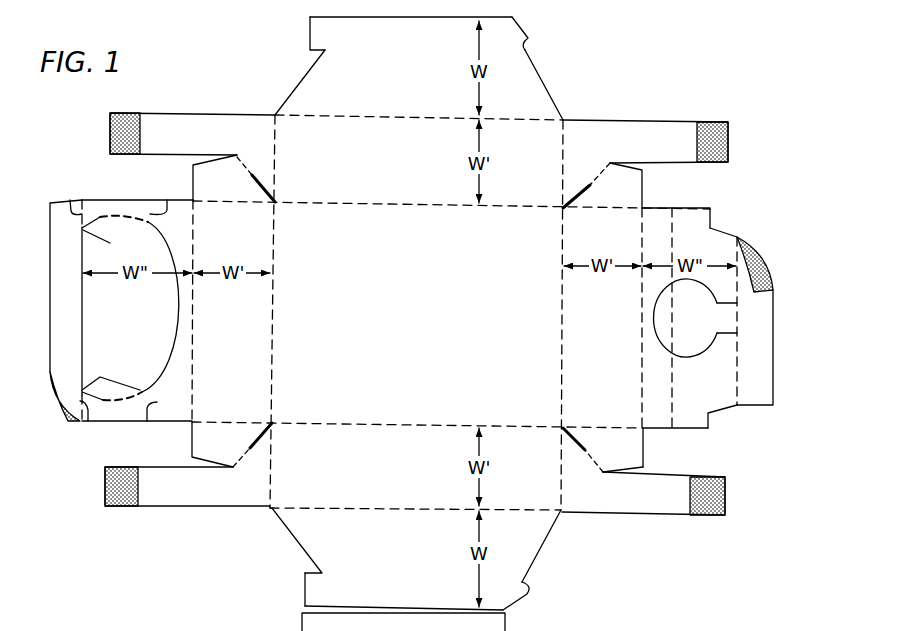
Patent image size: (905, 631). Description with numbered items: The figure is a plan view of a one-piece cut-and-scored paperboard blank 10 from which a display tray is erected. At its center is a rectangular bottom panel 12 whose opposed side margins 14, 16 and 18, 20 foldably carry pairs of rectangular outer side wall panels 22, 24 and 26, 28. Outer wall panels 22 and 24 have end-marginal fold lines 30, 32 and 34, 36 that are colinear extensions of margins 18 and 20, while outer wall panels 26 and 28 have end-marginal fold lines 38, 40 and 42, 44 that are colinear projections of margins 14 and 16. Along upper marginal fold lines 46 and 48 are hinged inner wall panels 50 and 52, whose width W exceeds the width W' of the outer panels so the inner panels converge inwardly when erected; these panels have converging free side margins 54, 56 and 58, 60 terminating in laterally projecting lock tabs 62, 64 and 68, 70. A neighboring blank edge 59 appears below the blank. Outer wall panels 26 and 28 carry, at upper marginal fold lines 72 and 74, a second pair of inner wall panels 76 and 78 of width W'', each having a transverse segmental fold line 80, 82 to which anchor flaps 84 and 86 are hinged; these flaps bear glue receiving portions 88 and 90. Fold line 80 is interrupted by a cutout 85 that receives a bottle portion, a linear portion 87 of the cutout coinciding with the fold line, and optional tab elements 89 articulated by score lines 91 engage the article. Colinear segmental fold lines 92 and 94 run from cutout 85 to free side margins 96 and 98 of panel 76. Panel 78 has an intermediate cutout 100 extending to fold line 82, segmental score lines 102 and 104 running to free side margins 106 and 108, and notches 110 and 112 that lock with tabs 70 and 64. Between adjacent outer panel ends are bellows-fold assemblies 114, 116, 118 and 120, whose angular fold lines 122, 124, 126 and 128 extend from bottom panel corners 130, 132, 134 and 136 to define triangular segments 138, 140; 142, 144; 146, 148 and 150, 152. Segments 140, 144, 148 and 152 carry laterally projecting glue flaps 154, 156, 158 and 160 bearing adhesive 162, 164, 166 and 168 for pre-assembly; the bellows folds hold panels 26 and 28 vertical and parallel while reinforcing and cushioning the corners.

The paperboard blank 10 is at (638, 73).
The bottom panel 12 is at (411, 332).
The side margin fold line 14 is at (435, 206).
The side margin fold line 16 is at (403, 423).
The side margin fold line 18 is at (276, 317).
The side margin fold line 20 is at (561, 343).
The outer side wall panel 22 is at (409, 173).
The outer side wall panel 24 is at (409, 478).
The outer side wall panel 26 is at (211, 348).
The outer side wall panel 28 is at (589, 348).
The end-marginal fold line 30 is at (278, 158).
The end-marginal fold line 32 is at (562, 154).
The end-marginal fold line 34 is at (273, 482).
The end-marginal fold line 36 is at (561, 476).
The end-marginal fold line 38 is at (247, 206).
The end-marginal fold line 40 is at (222, 421).
The end-marginal fold line 42 is at (611, 212).
The end-marginal fold line 44 is at (594, 427).
The upper marginal fold line 46 is at (387, 118).
The upper marginal fold line 48 is at (364, 508).
The inner wall panel 50 is at (413, 78).
The inner wall panel 52 is at (409, 562).
The converging free side margin 54 is at (303, 79).
The converging free side margin 56 is at (552, 92).
The converging free side margin 58 is at (299, 543).
The adjacent blank edge 59 is at (506, 612).
The converging free side margin 60 is at (549, 548).
The lock tab 62 is at (309, 40).
The lock tab 64 is at (531, 36).
The lock tab 68 is at (304, 590).
The lock tab 70 is at (528, 598).
The upper marginal fold line 72 is at (195, 302).
The upper marginal fold line 74 is at (641, 301).
The inner wall panel 76 is at (165, 240).
The inner wall panel 78 is at (689, 250).
The transverse marginal fold line 80 is at (70, 205).
The transverse marginal fold line 82 is at (733, 292).
The anchor flap 84 is at (53, 323).
The cutout portion 85 is at (177, 300).
The anchor flap 86 is at (762, 373).
The linear portion of cutout 87 is at (84, 336).
The glue receiving portion 88 is at (55, 400).
The tab elements 89 is at (111, 241).
The glue receiving portion 90 is at (763, 271).
The score lines 91 is at (120, 215).
The segmental fold line 92 is at (162, 208).
The segmental fold line 94 is at (152, 412).
The free side margin 96 is at (103, 197).
The free side margin 98 is at (108, 423).
The cutout portion 100 is at (713, 300).
The segmental score line 102 is at (673, 394).
The segmental score line 104 is at (672, 226).
The free side margin 106 is at (657, 430).
The free side margin 108 is at (664, 208).
The notch portion 110 is at (727, 412).
The notch portion 112 is at (728, 232).
The bellows-fold assembly 114 is at (237, 109).
The bellows-fold assembly 116 is at (632, 119).
The bellows-fold assembly 118 is at (200, 512).
The bellows-fold assembly 120 is at (618, 517).
The angular fold line 122 is at (262, 182).
The angular fold line 124 is at (588, 185).
The angular fold line 126 is at (253, 448).
The angular fold line 128 is at (560, 440).
The corner of bottom panel 130 is at (276, 203).
The corner of bottom panel 132 is at (557, 213).
The corner of bottom panel 134 is at (273, 421).
The corner of bottom panel 136 is at (556, 424).
The triangular segment 138 is at (201, 193).
The triangular segment 140 is at (222, 142).
The triangular segment 142 is at (602, 193).
The triangular segment 144 is at (587, 150).
The triangular segment 146 is at (212, 450).
The triangular segment 148 is at (217, 495).
The triangular segment 150 is at (602, 455).
The triangular segment 152 is at (585, 501).
The glue flap 154 is at (160, 118).
The glue flap 156 is at (662, 127).
The glue flap 158 is at (155, 496).
The glue flap 160 is at (672, 503).
The adhesive 162 is at (120, 129).
The adhesive 164 is at (726, 148).
The adhesive 166 is at (120, 508).
The adhesive 168 is at (726, 500).